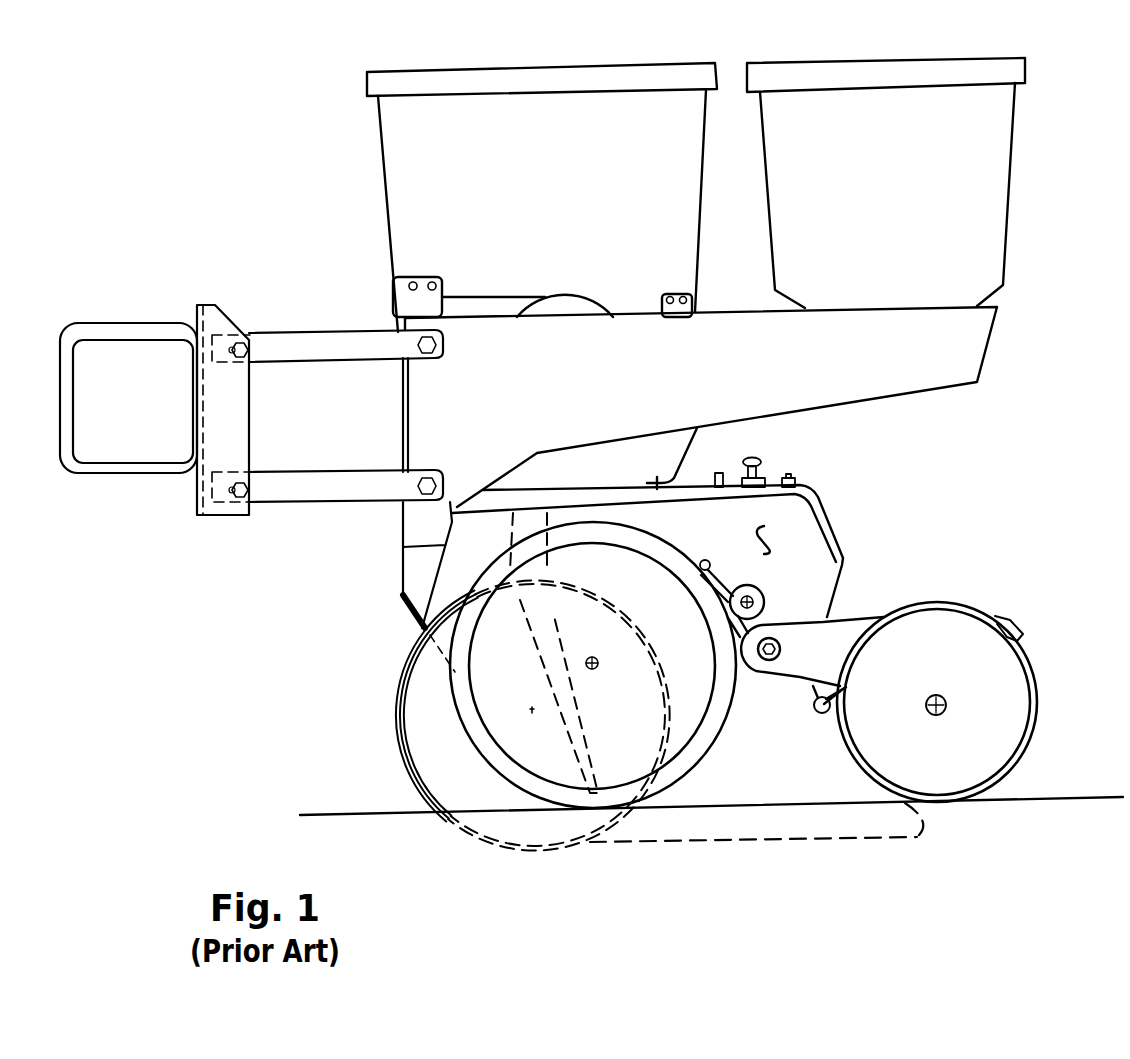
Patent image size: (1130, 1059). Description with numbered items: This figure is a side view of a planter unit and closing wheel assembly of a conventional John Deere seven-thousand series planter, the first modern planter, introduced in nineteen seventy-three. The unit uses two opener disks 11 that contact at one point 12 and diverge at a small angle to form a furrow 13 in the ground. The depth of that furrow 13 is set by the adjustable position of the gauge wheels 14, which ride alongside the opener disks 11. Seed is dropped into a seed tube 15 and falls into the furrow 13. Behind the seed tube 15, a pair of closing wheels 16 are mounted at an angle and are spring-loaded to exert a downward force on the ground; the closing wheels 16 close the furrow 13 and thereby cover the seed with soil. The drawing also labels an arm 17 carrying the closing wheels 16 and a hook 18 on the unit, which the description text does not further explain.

The opener disks 11 is at (404, 745).
The contact point 12 is at (453, 818).
The furrow 13 is at (700, 842).
The gauge wheels 14 is at (448, 682).
The seed tube 15 is at (560, 640).
The closing wheels 16 is at (1037, 707).
The press wheel arm 17 is at (833, 617).
The hook 18 is at (770, 537).